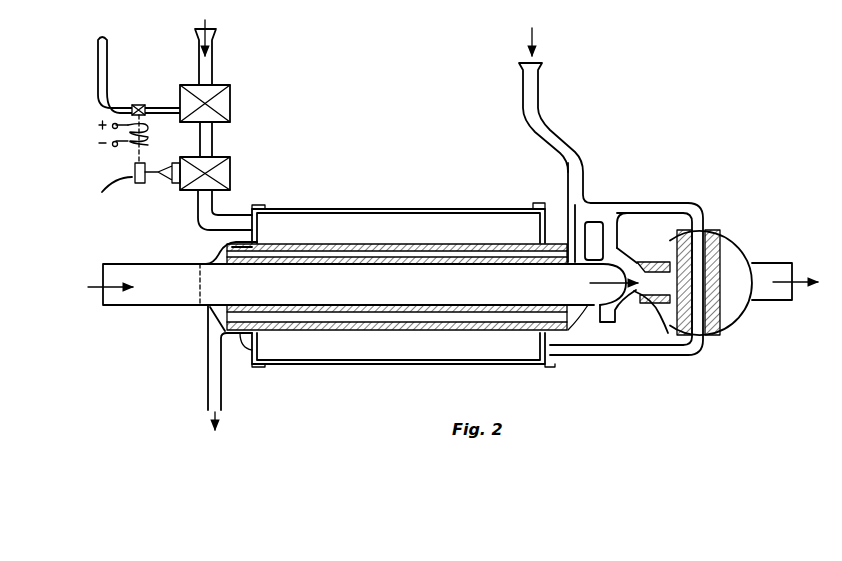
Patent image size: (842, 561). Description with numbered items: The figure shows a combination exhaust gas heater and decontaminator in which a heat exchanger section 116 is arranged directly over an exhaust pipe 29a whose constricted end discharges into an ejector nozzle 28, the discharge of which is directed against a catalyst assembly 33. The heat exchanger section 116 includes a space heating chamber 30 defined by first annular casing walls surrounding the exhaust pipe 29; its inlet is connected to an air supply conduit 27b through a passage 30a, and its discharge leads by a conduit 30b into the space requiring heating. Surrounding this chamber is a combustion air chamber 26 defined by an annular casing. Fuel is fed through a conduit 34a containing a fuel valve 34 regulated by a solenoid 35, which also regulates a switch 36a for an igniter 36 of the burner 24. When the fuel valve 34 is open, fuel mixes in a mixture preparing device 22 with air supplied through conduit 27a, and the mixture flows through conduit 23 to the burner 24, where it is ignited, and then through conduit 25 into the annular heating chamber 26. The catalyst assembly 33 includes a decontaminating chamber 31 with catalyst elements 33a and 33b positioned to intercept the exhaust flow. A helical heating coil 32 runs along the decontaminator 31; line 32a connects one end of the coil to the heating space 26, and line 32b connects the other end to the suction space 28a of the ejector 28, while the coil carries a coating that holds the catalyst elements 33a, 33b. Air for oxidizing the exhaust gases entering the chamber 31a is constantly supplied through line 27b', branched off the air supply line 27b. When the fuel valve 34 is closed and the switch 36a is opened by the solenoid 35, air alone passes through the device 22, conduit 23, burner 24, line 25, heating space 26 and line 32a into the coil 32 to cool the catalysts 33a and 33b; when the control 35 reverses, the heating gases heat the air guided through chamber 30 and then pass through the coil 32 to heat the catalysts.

The mixture preparing device 22 is at (222, 98).
The conduit 23 is at (215, 137).
The burner 24 is at (223, 173).
The conduit 25 is at (200, 208).
The combustion air chamber 26 is at (382, 222).
The air supply conduit 27a is at (216, 62).
The air supply conduit 27b is at (566, 115).
The branch air line 27b' is at (613, 199).
The ejector nozzle 28 is at (658, 225).
The suction space 28a is at (613, 312).
The exhaust pipe 29 is at (580, 293).
The exhaust pipe 29a is at (644, 303).
The space heating chamber 30 is at (443, 252).
The passage 30a is at (569, 226).
The conduit 30b is at (212, 382).
The decontaminating chamber 31 is at (733, 310).
The chamber 31a is at (663, 333).
The helical heating coil 32 is at (707, 338).
The line 32a is at (625, 348).
The line 32b is at (633, 210).
The catalyst assembly 33 is at (723, 270).
The catalyst element 33a is at (685, 262).
The catalyst element 33b is at (712, 245).
The fuel valve 34 is at (137, 104).
The fuel conduit 34a is at (98, 72).
The solenoid 35 is at (127, 147).
The igniter 36 is at (165, 183).
The switch 36a is at (140, 184).
The heat exchanger section 116 is at (419, 367).